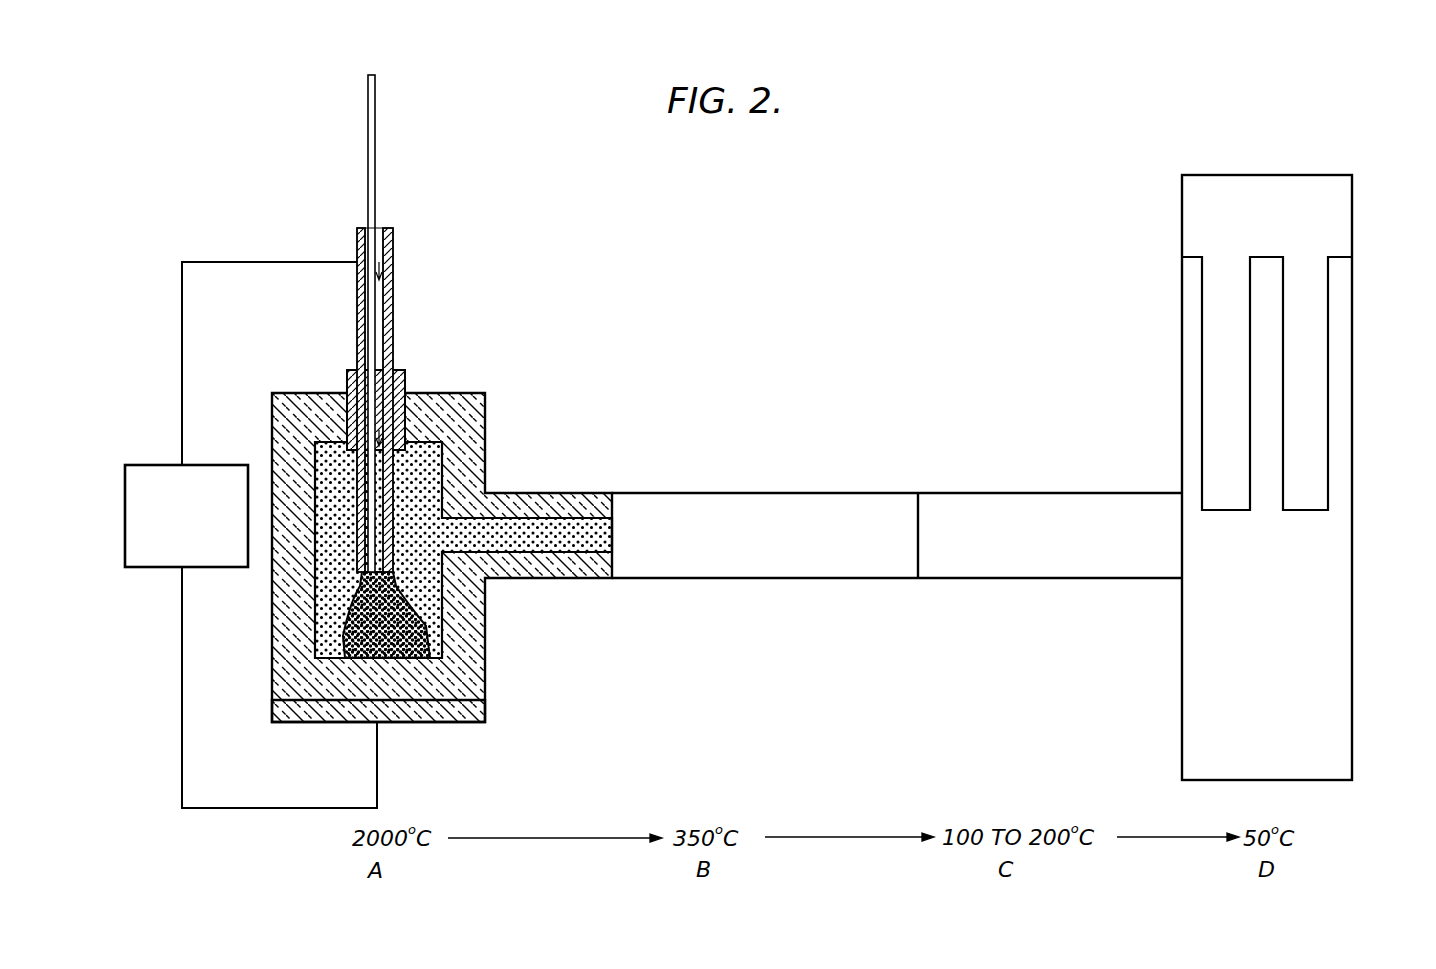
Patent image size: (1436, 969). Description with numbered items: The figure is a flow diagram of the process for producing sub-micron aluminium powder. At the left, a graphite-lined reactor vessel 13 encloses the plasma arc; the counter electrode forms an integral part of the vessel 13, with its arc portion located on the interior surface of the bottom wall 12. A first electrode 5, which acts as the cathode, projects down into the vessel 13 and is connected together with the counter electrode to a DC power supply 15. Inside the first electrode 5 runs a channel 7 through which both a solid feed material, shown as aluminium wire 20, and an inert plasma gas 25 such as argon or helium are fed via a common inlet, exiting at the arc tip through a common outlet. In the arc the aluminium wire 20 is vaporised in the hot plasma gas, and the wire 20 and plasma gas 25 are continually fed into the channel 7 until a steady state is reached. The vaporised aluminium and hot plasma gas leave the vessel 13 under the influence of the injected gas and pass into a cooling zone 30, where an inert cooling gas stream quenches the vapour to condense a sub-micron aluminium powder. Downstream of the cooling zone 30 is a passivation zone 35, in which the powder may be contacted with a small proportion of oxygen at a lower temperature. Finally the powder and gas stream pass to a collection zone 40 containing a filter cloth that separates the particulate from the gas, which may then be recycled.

The first electrode 5 is at (393, 300).
The channel 7 is at (380, 342).
The bottom wall 12 is at (320, 722).
The reactor vessel 13 is at (287, 670).
The DC power supply 15 is at (152, 465).
The aluminium wire 20 is at (375, 104).
The plasma gas 25 is at (378, 228).
The cooling zone 30 is at (768, 493).
The passivation zone 35 is at (1054, 493).
The collection zone 40 is at (1352, 576).